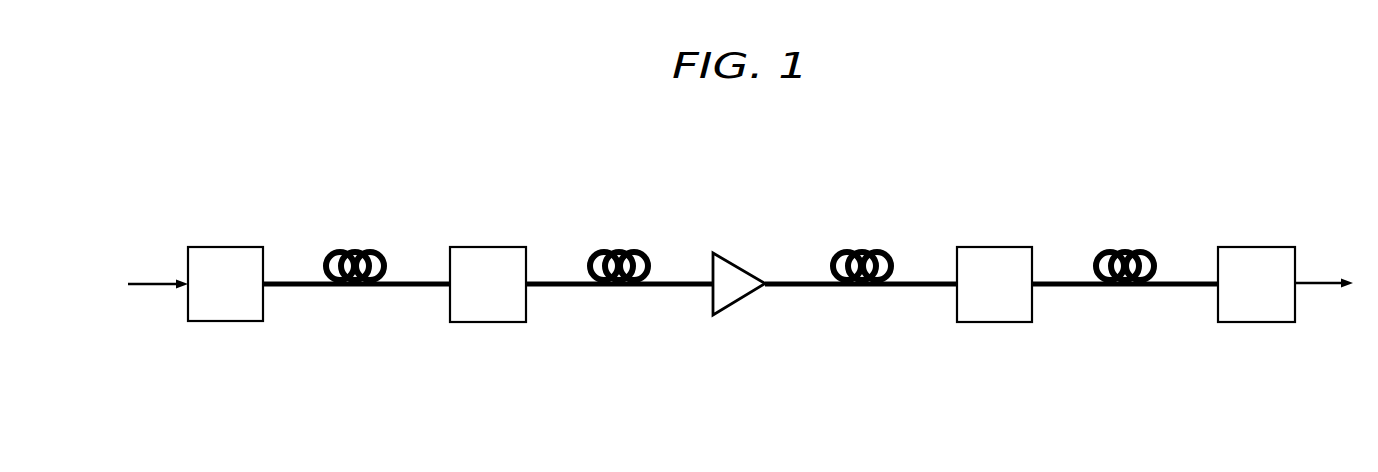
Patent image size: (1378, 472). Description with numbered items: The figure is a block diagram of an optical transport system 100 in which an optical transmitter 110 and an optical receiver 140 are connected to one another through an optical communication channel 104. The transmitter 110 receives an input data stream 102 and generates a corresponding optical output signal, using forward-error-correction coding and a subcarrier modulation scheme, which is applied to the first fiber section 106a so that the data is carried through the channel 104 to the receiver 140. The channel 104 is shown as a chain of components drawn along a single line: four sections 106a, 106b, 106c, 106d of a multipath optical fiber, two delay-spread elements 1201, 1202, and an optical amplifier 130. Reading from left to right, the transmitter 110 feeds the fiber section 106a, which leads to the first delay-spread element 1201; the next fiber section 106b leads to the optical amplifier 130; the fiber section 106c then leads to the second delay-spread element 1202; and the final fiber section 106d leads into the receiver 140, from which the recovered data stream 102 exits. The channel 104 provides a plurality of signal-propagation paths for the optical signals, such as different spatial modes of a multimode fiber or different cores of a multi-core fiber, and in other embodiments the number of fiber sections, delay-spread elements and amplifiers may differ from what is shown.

The optical transport system 100 is at (753, 130).
The input data stream 102 is at (148, 286).
The optical communication channel 104 is at (695, 398).
The section of multipath optical fiber 106a is at (360, 251).
The section of multipath optical fiber 106b is at (620, 252).
The section of multipath optical fiber 106c is at (865, 252).
The section of multipath optical fiber 106d is at (1128, 252).
The optical transmitter 110 is at (217, 247).
The delay-spread element 1201 is at (477, 247).
The delay-spread element 1202 is at (982, 247).
The optical amplifier 130 is at (733, 260).
The optical receiver 140 is at (1243, 247).